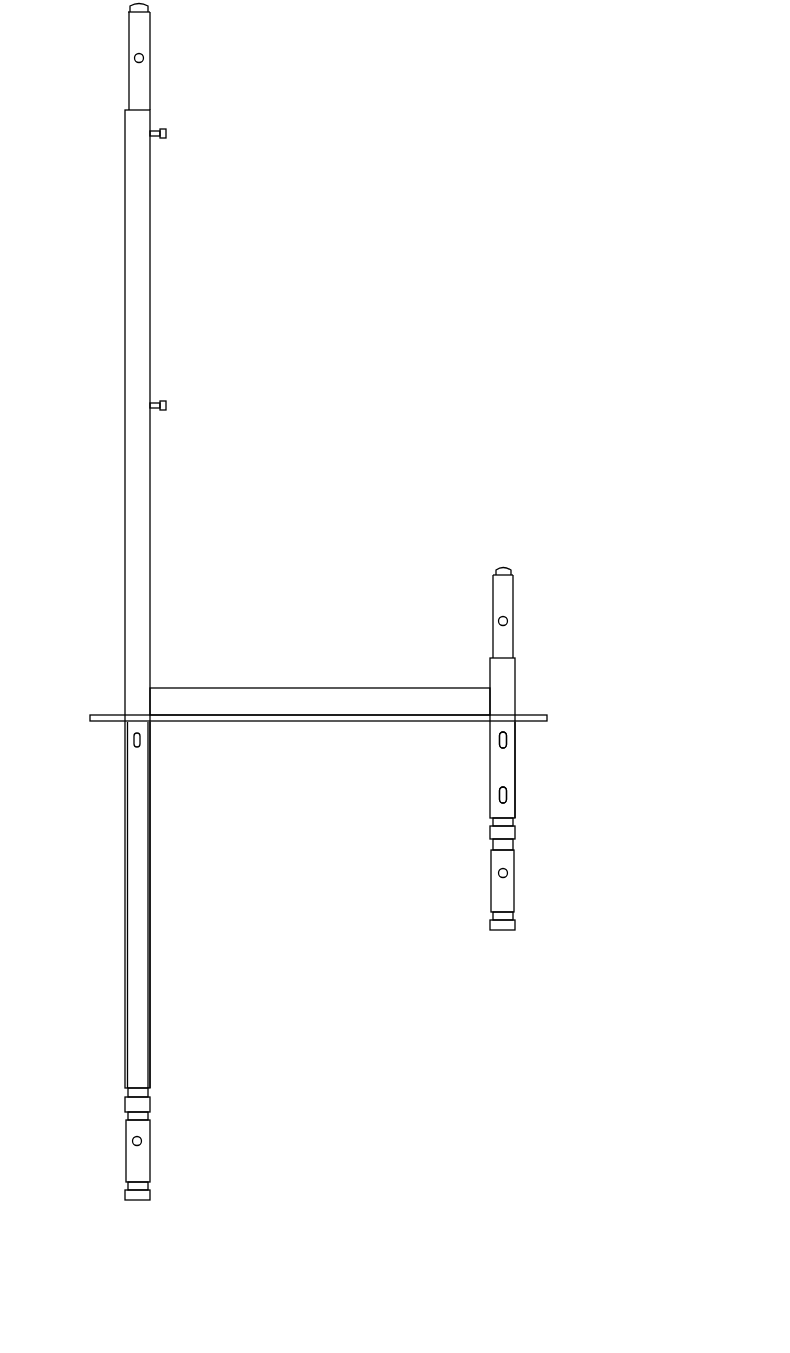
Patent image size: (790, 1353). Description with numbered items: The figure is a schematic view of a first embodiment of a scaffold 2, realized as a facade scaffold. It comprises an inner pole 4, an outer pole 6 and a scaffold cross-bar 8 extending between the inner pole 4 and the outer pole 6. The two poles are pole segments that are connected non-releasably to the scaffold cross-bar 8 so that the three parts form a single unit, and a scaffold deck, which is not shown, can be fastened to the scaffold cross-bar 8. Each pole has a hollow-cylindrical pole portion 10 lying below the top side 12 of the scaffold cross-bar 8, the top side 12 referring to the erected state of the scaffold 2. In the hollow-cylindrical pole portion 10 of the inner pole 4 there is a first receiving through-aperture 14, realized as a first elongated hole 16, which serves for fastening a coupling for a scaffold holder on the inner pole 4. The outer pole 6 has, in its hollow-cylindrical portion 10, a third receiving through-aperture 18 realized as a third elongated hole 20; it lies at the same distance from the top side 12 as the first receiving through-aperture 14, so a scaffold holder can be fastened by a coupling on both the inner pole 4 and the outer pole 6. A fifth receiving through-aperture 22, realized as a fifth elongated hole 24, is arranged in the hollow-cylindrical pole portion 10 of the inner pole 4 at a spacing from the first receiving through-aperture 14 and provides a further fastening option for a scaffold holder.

The scaffold 2 is at (328, 383).
The inner pole 4 is at (461, 818).
The outer pole 6 is at (168, 838).
The scaffold cross-bar 8 is at (232, 708).
The hollow-cylindrical pole portion 10 is at (531, 768).
The top side of the scaffold cross-bar 12 is at (412, 683).
The first receiving through-aperture 14 is at (511, 740).
The first elongated hole 16 is at (503, 740).
The third receiving through-aperture 18 is at (158, 133).
The third elongated hole 20 is at (133, 740).
The fifth receiving through-aperture 22 is at (512, 796).
The fifth elongated hole 24 is at (503, 795).